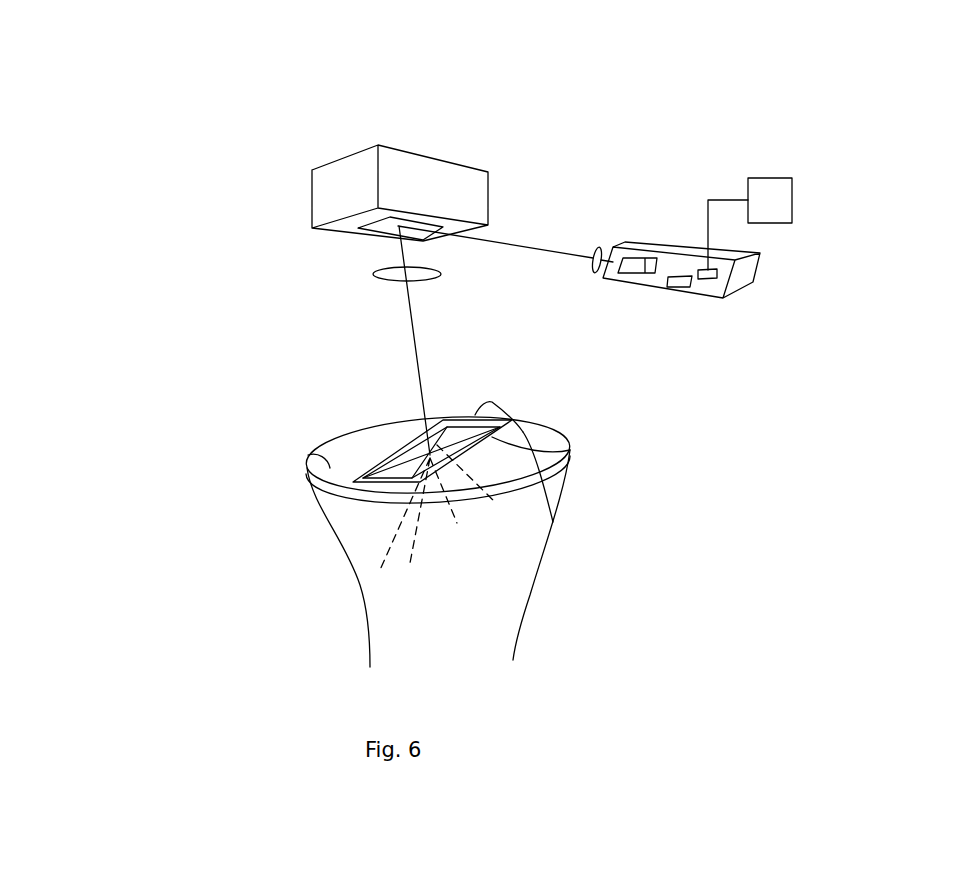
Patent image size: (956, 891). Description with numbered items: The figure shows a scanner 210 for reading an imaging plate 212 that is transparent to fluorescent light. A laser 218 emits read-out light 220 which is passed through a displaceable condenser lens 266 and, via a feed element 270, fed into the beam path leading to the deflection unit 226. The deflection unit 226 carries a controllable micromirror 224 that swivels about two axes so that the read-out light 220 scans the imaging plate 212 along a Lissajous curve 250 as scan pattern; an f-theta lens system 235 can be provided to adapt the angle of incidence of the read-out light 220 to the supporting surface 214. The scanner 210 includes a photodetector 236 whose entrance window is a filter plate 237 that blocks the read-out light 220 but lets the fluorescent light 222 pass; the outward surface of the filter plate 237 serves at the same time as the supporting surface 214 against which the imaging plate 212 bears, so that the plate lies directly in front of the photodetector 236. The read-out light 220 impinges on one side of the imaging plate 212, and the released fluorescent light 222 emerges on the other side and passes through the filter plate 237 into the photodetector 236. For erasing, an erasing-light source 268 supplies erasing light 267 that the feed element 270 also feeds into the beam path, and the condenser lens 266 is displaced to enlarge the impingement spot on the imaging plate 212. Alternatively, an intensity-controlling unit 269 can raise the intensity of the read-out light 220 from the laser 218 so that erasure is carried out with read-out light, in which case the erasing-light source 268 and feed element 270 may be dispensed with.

The scanner 210 is at (233, 155).
The deflection unit 226 is at (408, 168).
The micromirror 224 is at (383, 227).
The f-theta lens system 235 is at (390, 275).
The read-out light 220 is at (507, 238).
The condenser lens 266 is at (598, 253).
The intensity-controlling unit 269 is at (760, 187).
The laser 218 is at (738, 290).
The feed element 270 is at (657, 268).
The erasing light 267 is at (662, 275).
The erasing-light source 268 is at (683, 288).
The supporting surface 214 is at (307, 454).
The filter plate 237 is at (560, 458).
The Lissajous curve 250 is at (512, 422).
The imaging plate 212 is at (553, 521).
The photodetector 236 is at (387, 607).
The fluorescent light 222 is at (453, 512).